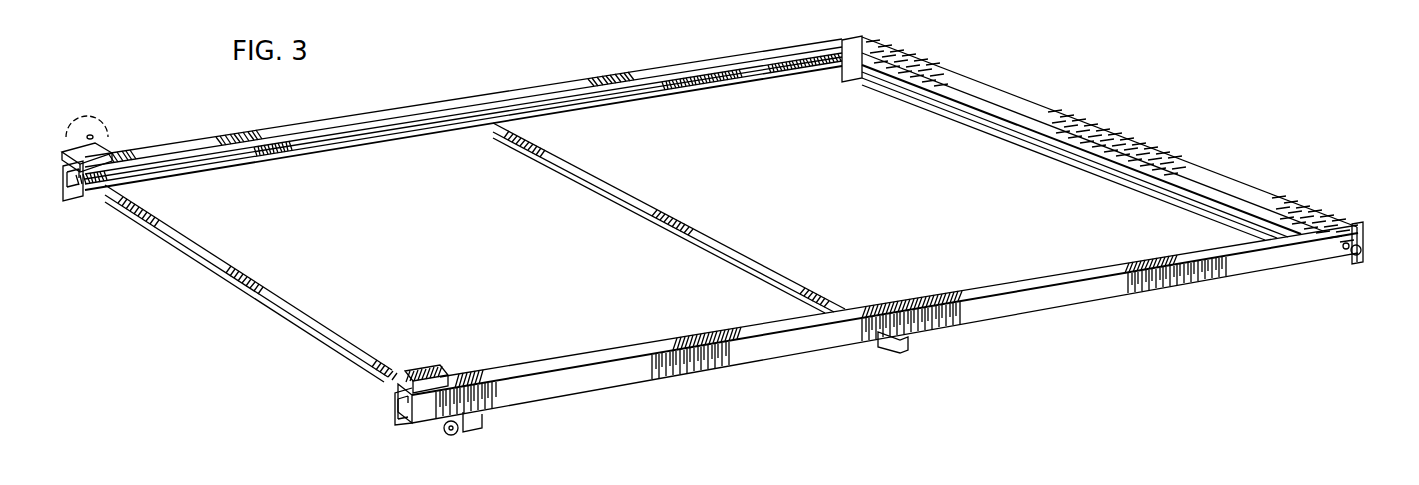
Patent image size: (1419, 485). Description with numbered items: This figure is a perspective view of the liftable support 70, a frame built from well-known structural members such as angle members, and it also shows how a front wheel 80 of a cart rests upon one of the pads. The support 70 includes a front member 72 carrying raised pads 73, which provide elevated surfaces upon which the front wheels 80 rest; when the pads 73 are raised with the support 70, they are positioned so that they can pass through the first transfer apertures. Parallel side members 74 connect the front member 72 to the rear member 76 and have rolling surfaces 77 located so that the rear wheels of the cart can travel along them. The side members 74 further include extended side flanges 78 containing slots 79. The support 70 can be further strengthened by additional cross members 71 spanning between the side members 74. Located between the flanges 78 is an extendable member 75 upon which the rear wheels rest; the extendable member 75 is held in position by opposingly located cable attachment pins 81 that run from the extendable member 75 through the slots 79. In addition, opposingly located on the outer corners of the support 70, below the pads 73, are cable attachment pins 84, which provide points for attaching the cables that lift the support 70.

The liftable support 70 is at (737, 373).
The cross members 71 is at (642, 182).
The front member 72 is at (262, 288).
The raised pads 73 is at (112, 148).
The parallel side members 74 is at (340, 130).
The extendable member 75 is at (1148, 150).
The rear member 76 is at (1025, 120).
The rolling surfaces 77 is at (655, 70).
The extended side flanges 78 is at (1350, 222).
The slots 79 is at (1345, 255).
The front wheels 80 is at (80, 118).
The cable attachment pins 81 is at (1362, 248).
The cable attachment pins 84 is at (456, 435).